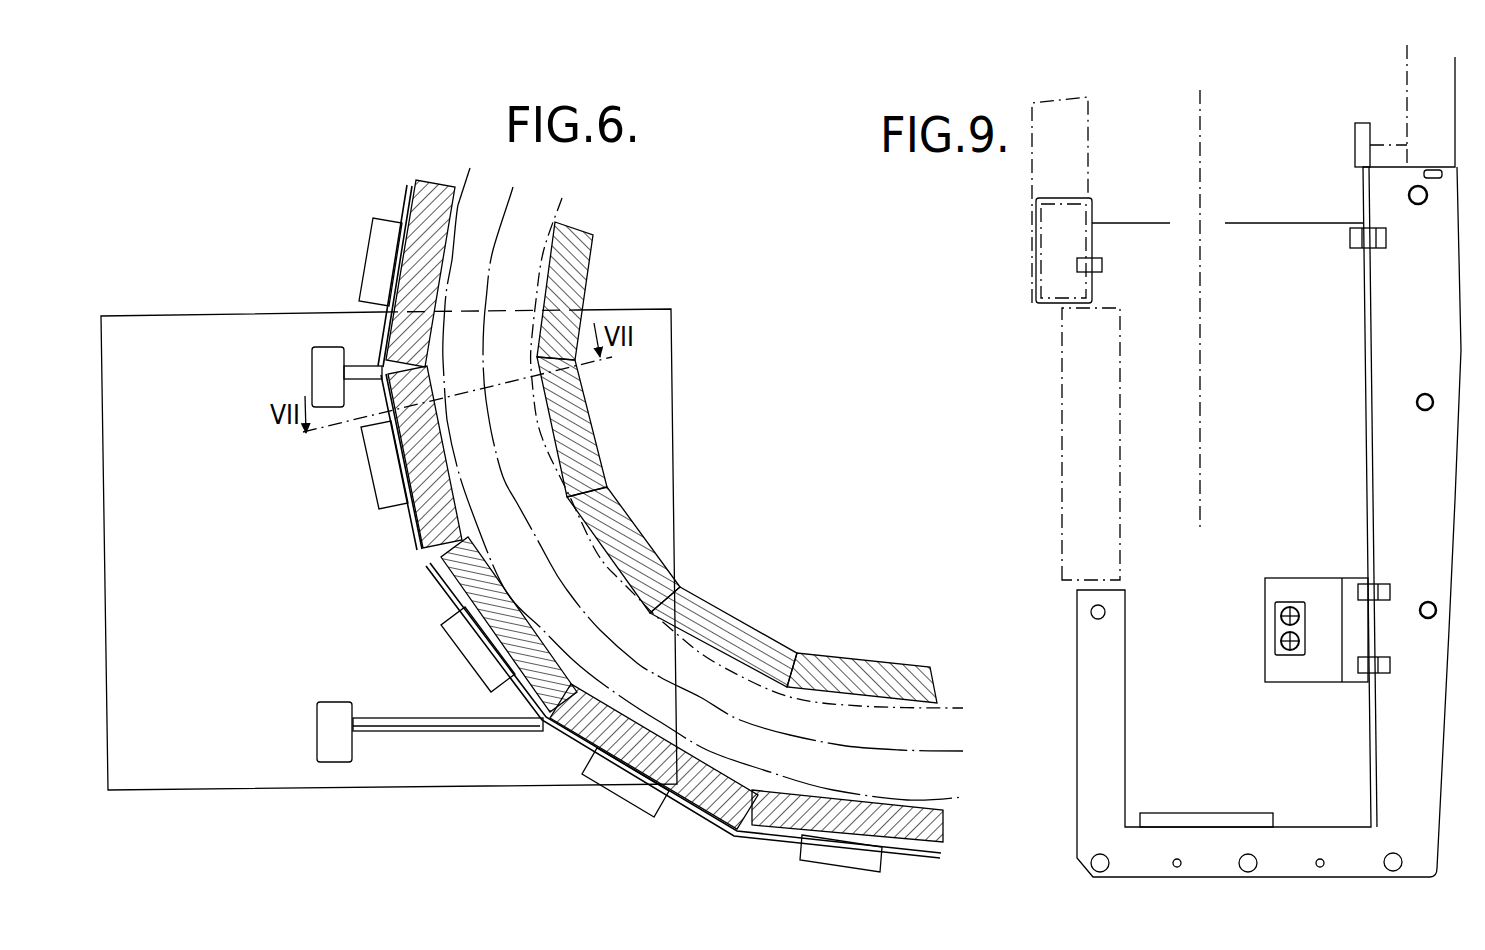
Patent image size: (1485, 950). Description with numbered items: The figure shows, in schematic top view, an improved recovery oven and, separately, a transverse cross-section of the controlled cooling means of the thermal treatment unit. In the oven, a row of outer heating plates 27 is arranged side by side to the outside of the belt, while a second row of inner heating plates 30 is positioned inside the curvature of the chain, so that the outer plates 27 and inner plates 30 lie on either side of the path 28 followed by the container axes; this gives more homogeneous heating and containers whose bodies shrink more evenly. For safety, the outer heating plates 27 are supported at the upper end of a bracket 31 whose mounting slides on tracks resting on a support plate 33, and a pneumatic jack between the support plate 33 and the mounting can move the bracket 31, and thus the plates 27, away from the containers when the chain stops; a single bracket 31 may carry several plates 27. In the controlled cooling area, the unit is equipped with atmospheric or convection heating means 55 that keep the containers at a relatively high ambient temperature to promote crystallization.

In FIG. 6, the heating plates 27 is at (410, 200).
In FIG. 6, the trajectory 28 is at (493, 427).
In FIG. 9, the trajectory 28 is at (1207, 398).
In FIG. 6, the heating plates 30 is at (580, 287).
In FIG. 6, the bracket 31 is at (371, 362).
In FIG. 6, the support plate 33 is at (183, 684).
In FIG. 9, the atmospheric or convection heating means 55 is at (1263, 628).